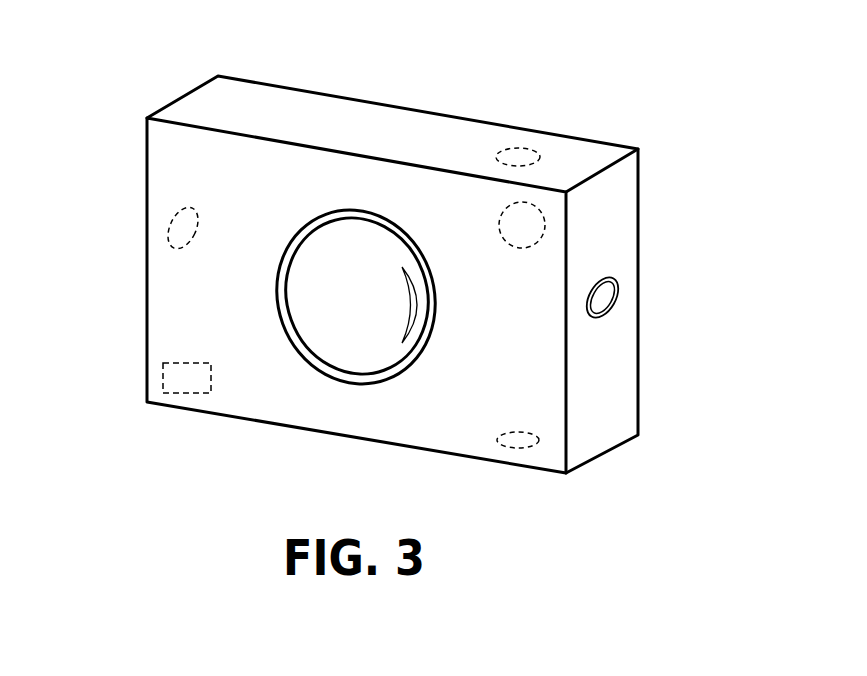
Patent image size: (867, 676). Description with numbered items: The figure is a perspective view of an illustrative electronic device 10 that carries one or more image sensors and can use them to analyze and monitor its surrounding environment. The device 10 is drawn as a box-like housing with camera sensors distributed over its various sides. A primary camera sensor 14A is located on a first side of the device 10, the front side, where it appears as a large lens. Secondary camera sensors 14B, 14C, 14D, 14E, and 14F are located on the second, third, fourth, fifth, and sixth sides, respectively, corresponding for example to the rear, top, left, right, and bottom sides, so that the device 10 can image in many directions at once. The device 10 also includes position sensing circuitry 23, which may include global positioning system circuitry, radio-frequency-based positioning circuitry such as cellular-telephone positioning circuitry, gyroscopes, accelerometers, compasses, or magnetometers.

The electronic device 10 is at (650, 68).
The camera sensor 14A is at (330, 245).
The camera sensor 14B is at (537, 228).
The camera sensor 14C is at (523, 150).
The camera sensor 14D is at (605, 288).
The camera sensor 14E is at (182, 227).
The camera sensor 14F is at (519, 440).
The position sensing circuitry 23 is at (187, 382).